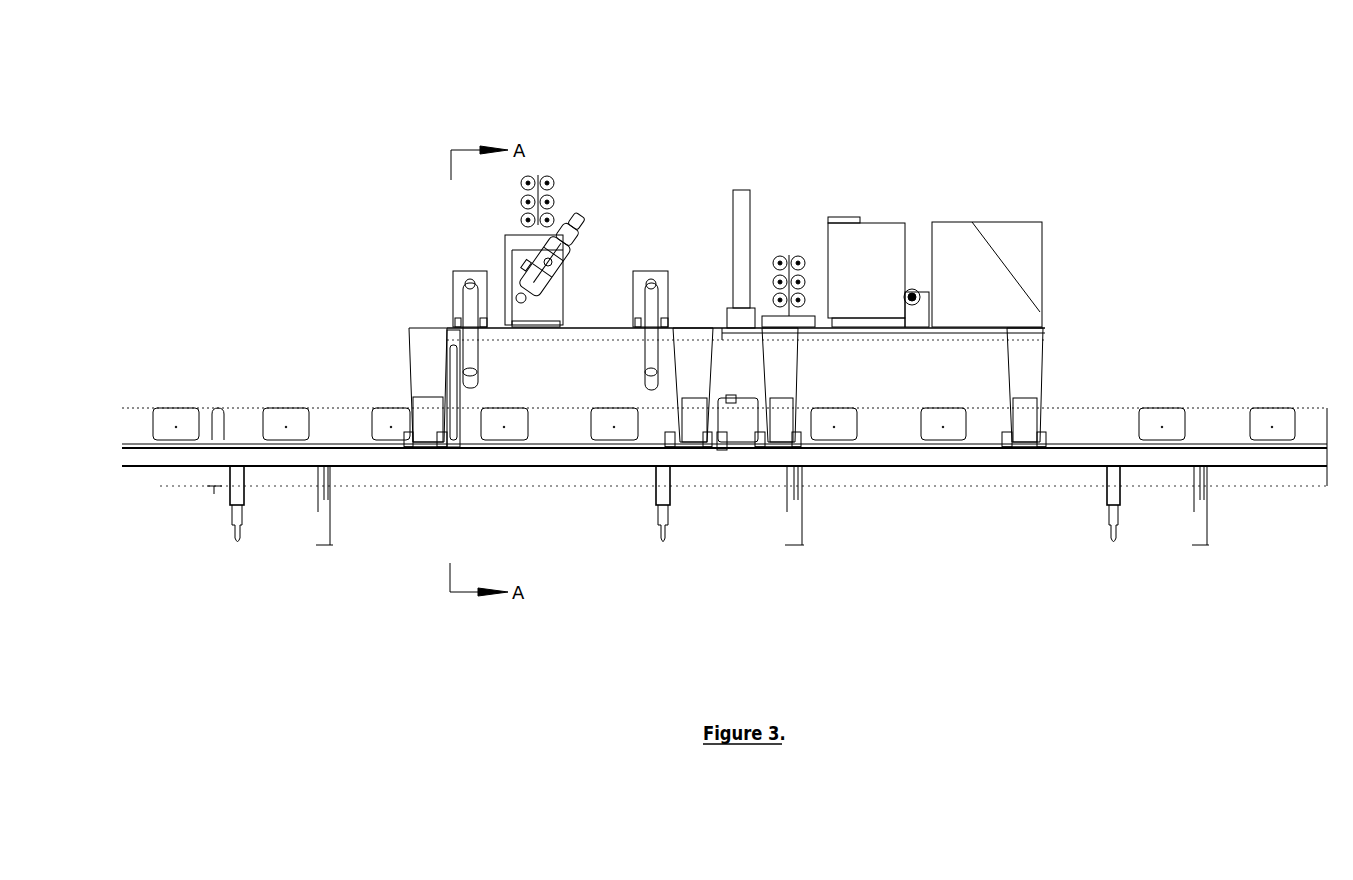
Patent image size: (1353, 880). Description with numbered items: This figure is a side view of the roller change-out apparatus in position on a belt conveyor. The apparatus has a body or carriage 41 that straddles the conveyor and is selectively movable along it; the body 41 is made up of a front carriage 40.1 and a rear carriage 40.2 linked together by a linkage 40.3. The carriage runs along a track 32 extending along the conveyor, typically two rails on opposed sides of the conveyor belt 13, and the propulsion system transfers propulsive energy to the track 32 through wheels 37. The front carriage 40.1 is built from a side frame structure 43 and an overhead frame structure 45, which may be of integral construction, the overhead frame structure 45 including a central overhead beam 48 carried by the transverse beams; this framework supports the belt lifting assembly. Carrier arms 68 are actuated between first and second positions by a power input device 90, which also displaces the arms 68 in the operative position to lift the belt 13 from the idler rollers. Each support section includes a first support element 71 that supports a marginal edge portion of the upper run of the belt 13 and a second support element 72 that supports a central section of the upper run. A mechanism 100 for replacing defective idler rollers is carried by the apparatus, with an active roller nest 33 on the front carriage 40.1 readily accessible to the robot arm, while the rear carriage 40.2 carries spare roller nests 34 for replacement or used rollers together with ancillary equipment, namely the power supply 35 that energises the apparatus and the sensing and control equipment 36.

The conveyor belt 13 is at (558, 410).
The track 32 is at (1252, 449).
The active roller nest 33 is at (538, 190).
The spare roller nests 34 is at (790, 258).
The power supply 35 is at (989, 282).
The sensing and control equipment 36 is at (875, 276).
The wheels 37 is at (1022, 430).
The front carriage 40.1 is at (355, 236).
The rear carriage 40.2 is at (1082, 242).
The linkage 40.3 is at (737, 397).
The body or carriage 41 is at (370, 323).
The side frame structure 43 is at (413, 350).
The overhead frame structure 45 is at (448, 330).
The central overhead beam 48 is at (610, 325).
The carrier arms 68 is at (482, 323).
The first support element 71 is at (648, 330).
The second support element 72 is at (648, 370).
The power input device 90 is at (470, 268).
The mechanism for replacing defective idler rollers 100 is at (572, 237).